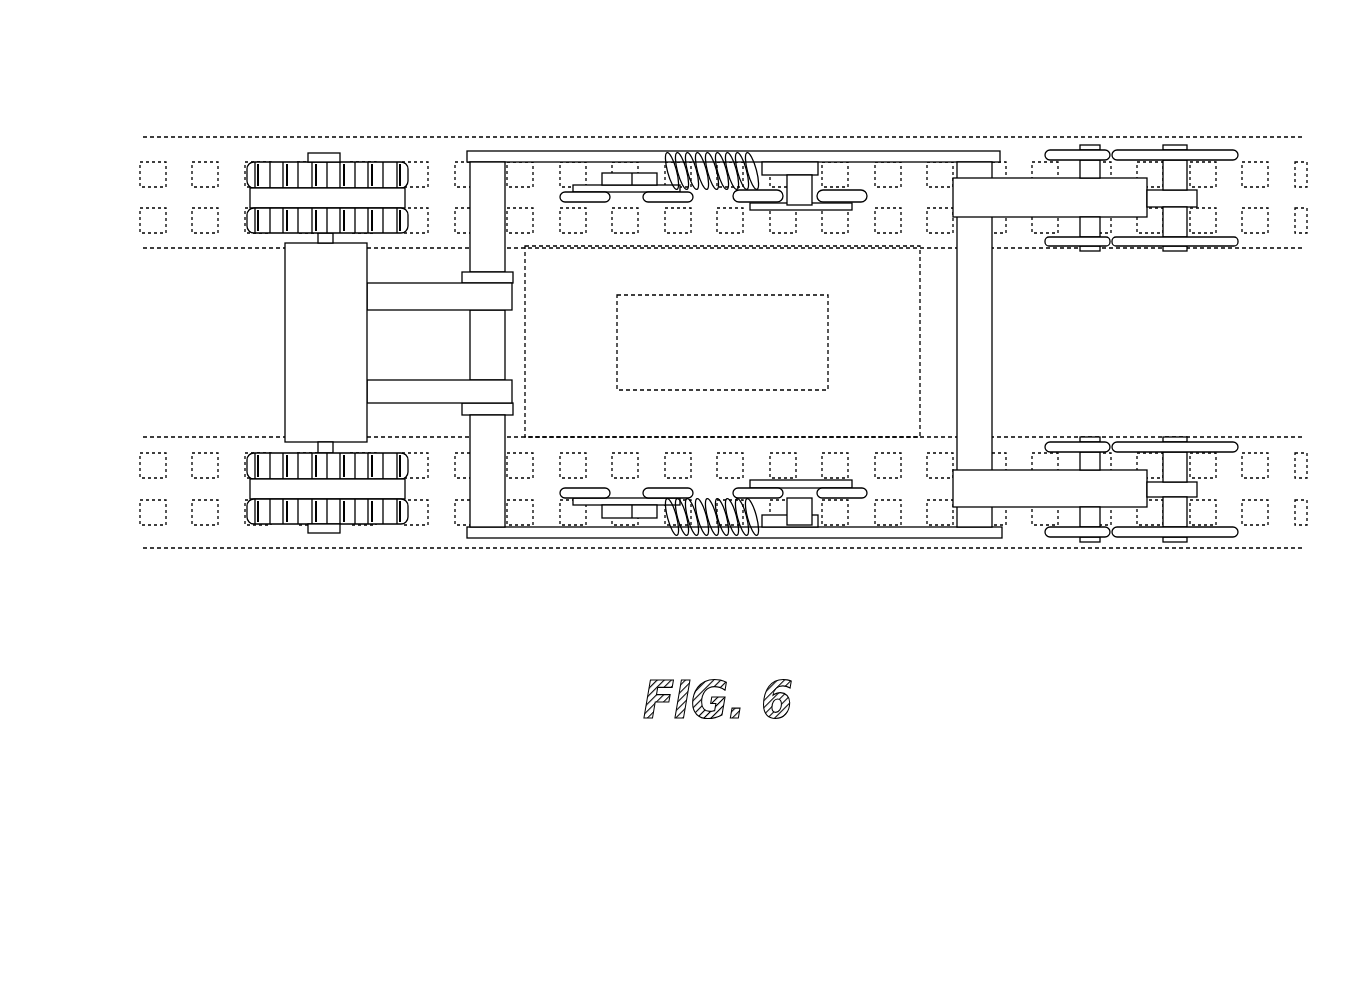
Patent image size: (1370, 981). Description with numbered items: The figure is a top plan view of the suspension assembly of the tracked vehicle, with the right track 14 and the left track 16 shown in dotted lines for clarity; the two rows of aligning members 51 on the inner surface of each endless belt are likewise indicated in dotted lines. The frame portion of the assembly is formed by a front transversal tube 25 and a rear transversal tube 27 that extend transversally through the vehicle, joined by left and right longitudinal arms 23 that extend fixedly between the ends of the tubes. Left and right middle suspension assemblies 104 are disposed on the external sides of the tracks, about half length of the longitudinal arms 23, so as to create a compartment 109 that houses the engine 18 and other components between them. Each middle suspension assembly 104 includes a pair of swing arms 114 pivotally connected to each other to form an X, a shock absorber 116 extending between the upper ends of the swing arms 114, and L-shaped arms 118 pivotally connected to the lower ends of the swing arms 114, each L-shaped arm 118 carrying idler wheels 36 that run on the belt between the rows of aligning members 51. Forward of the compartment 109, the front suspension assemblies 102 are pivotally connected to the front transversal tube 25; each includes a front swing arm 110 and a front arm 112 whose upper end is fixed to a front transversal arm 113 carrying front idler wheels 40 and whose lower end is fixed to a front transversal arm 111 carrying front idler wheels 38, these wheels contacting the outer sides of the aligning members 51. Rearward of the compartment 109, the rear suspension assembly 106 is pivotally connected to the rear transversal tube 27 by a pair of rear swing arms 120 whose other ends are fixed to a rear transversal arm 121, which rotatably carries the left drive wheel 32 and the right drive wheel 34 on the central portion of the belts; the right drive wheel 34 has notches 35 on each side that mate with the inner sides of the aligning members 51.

The right track 14 is at (1298, 440).
The left track 16 is at (1272, 137).
The engine 18 is at (709, 354).
The longitudinal arm 23 is at (918, 150).
The front transversal tube 25 is at (975, 478).
The rear transversal tube 27 is at (487, 507).
The left drive wheel 32 is at (272, 162).
The right drive wheel 34 is at (298, 497).
The notches 35 is at (395, 527).
The idler wheels 36 is at (648, 203).
The front idler wheels 38 is at (1065, 150).
The front idler wheels 40 is at (1135, 150).
The aligning members 51 is at (212, 512).
The front suspension assembly 102 is at (1040, 458).
The middle suspension assembly 104 is at (886, 79).
The rear suspension assembly 106 is at (266, 365).
The compartment 109 is at (855, 354).
The front swing arm 110 is at (1020, 178).
The front transversal arm 111 is at (1160, 442).
The front arm 112 is at (1192, 490).
The front transversal arm 113 is at (1180, 455).
The swing arms 114 is at (625, 173).
The shock absorber 116 is at (712, 152).
The L-shaped arm 118 is at (570, 190).
The rear swing arm 120 is at (400, 283).
The rear transversal arm 121 is at (295, 316).